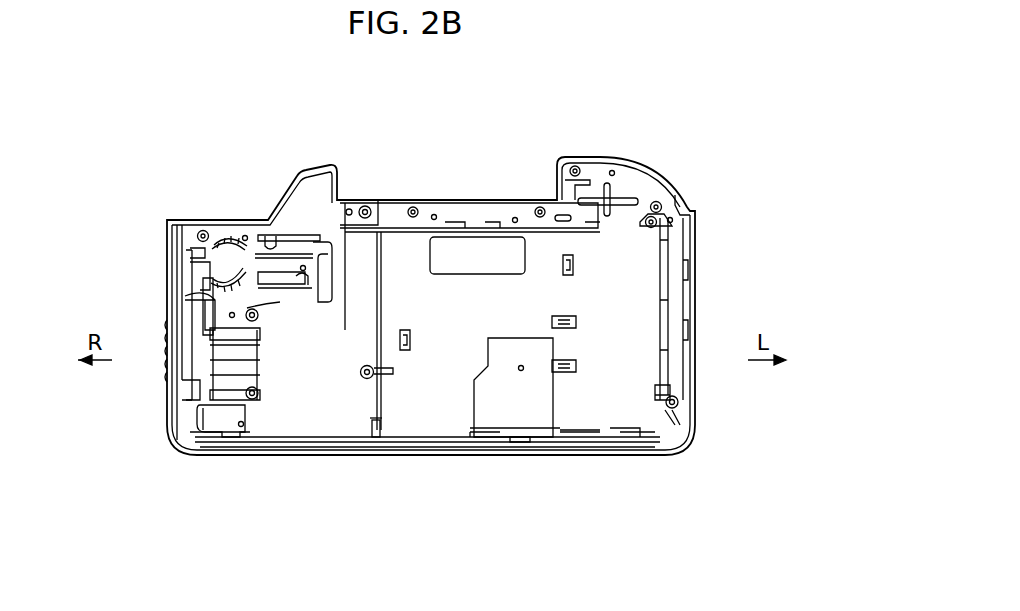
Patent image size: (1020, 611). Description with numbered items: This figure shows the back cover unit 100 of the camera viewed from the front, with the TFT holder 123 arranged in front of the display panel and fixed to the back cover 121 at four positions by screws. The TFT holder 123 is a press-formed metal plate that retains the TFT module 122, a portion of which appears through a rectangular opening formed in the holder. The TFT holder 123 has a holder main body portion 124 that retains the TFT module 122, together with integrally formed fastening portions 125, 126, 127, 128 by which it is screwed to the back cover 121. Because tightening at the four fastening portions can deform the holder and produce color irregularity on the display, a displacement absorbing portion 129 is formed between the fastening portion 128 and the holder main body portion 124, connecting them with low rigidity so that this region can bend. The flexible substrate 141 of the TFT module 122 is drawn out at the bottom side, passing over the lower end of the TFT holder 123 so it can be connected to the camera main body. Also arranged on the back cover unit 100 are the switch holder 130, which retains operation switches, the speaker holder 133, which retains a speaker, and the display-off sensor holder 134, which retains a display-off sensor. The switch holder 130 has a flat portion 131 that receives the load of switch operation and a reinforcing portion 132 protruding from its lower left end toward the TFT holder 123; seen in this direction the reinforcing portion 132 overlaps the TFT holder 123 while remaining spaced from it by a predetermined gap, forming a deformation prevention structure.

The back cover unit 100 is at (425, 145).
The back cover 121 is at (425, 203).
The TFT module 122 is at (478, 240).
The TFT holder 123 is at (636, 412).
The holder main body portion 124 is at (603, 424).
The fastening portion 125 is at (366, 205).
The fastening portion 126 is at (672, 208).
The fastening portion 127 is at (676, 412).
The fastening portion 128 is at (360, 380).
The displacement absorbing portion 129 is at (392, 380).
The switch holder 130 is at (262, 414).
The flat portion 131 is at (297, 323).
The reinforcing portion 132 is at (373, 430).
The speaker holder 133 is at (226, 246).
The display-off sensor holder 134 is at (640, 188).
The flexible substrate 141 is at (522, 434).